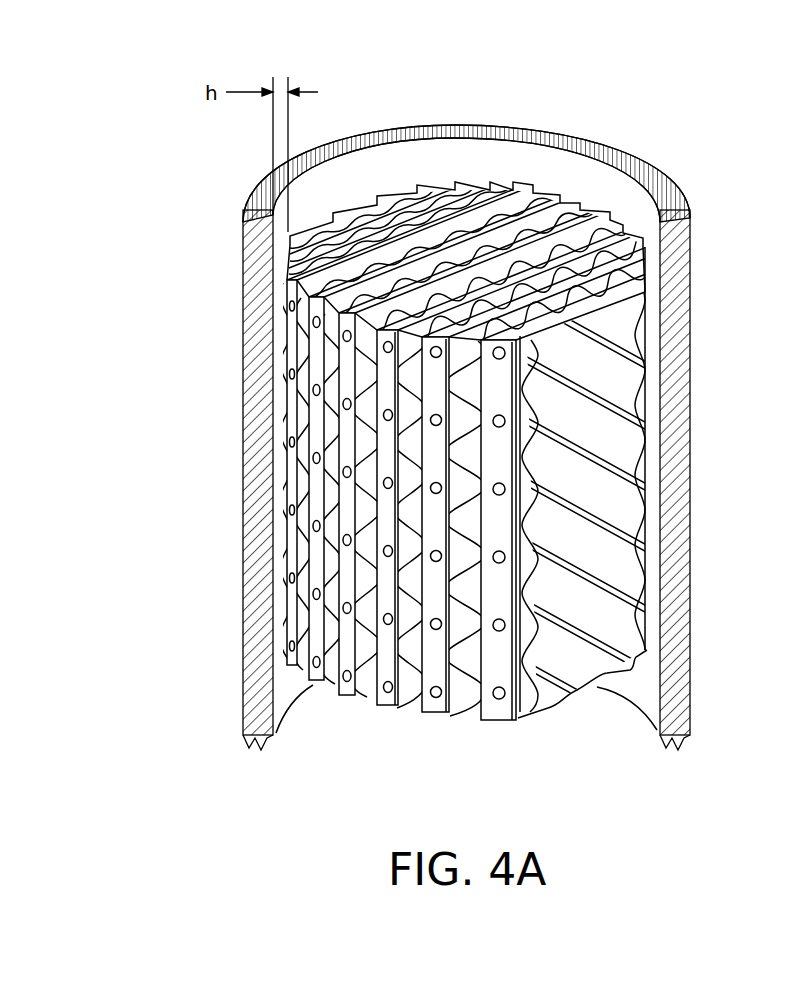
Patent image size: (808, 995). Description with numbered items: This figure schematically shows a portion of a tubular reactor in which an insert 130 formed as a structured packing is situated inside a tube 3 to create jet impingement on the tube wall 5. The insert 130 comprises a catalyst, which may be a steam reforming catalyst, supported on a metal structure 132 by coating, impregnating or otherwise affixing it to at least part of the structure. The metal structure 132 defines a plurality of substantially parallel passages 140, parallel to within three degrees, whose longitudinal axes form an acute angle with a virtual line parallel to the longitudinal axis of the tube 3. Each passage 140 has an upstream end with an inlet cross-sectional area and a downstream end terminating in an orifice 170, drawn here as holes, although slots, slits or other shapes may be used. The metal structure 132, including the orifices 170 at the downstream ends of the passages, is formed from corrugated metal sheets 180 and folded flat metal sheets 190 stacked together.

The tube 3 is at (226, 398).
The tube wall 5 is at (258, 300).
The insert 130 is at (462, 744).
The metal structure 132 is at (602, 480).
The substantially parallel passages 140 is at (613, 240).
The orifice 170 is at (580, 737).
The corrugated metal sheets 180 is at (570, 225).
The folded flat metal sheets 190 is at (466, 215).